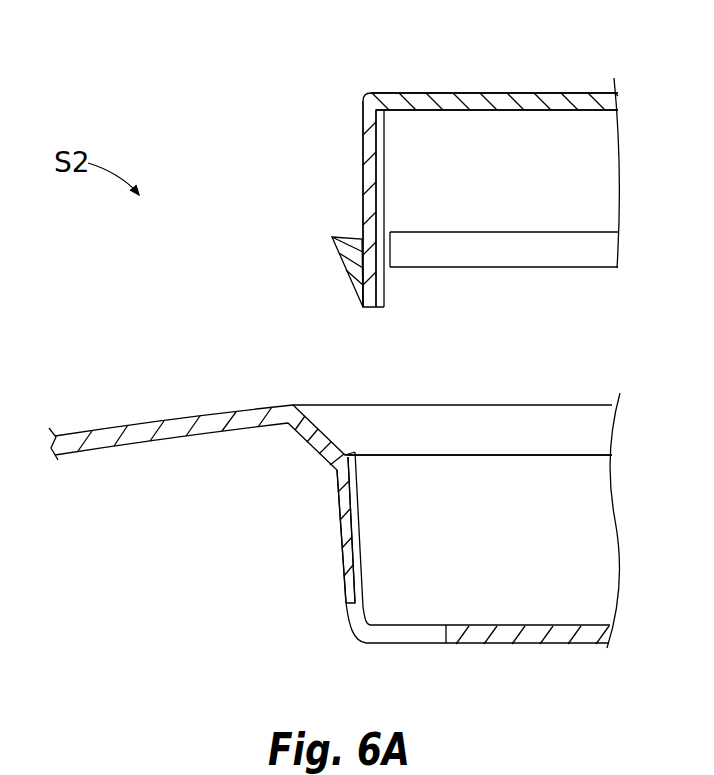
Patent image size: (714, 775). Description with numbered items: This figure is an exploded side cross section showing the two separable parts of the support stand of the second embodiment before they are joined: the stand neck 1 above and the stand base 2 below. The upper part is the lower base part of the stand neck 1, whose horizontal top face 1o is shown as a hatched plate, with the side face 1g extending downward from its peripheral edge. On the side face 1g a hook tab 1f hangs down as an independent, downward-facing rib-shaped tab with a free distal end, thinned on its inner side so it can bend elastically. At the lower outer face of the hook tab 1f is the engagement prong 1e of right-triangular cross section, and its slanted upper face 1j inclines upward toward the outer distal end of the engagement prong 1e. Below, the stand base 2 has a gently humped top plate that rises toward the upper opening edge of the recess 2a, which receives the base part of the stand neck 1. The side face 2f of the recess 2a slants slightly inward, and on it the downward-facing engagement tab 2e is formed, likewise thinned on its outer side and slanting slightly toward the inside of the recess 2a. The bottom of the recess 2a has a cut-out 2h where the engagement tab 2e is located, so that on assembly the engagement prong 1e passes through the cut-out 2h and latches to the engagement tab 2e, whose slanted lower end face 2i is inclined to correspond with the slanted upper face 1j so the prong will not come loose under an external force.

The stand neck 1 is at (478, 94).
The top face 1o is at (552, 94).
The hook tab 1f is at (363, 146).
The side face 1g is at (436, 268).
The engagement prong 1e is at (349, 278).
The slanted upper face 1j is at (347, 232).
The stand base 2 is at (140, 418).
The side face 2f is at (500, 473).
The engagement tab 2e is at (338, 537).
The slanted lower end face 2i is at (348, 617).
The cut-out 2h is at (405, 645).
The recess 2a is at (577, 625).